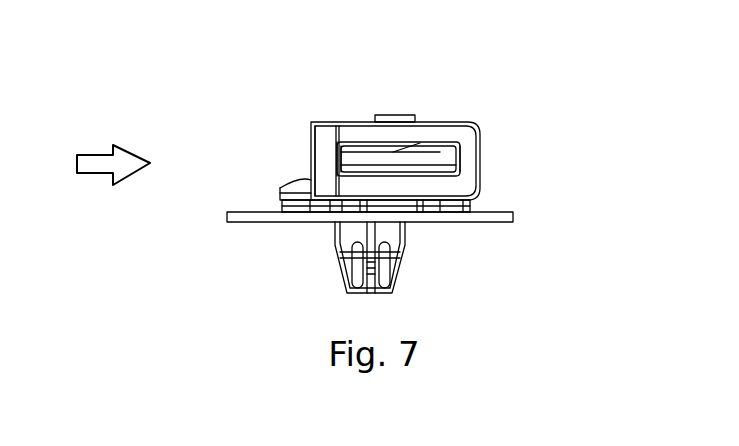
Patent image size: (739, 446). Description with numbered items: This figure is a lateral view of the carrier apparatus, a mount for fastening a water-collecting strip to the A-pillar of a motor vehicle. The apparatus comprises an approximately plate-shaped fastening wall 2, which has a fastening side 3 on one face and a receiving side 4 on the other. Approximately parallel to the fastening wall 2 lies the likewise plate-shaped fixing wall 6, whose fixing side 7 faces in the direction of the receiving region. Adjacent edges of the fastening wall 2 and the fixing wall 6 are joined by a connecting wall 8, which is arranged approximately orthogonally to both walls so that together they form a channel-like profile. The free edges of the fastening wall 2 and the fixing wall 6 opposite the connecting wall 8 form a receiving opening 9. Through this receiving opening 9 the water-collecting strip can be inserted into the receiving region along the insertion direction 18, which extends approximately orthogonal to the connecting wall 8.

The fastening wall 2 is at (357, 182).
The fastening side 3 is at (352, 188).
The receiving side 4 is at (404, 171).
The fixing wall 6 is at (424, 134).
The fixing side 7 is at (357, 147).
The connecting wall 8 is at (467, 167).
The receiving opening 9 is at (335, 152).
The insertion direction 18 is at (83, 177).